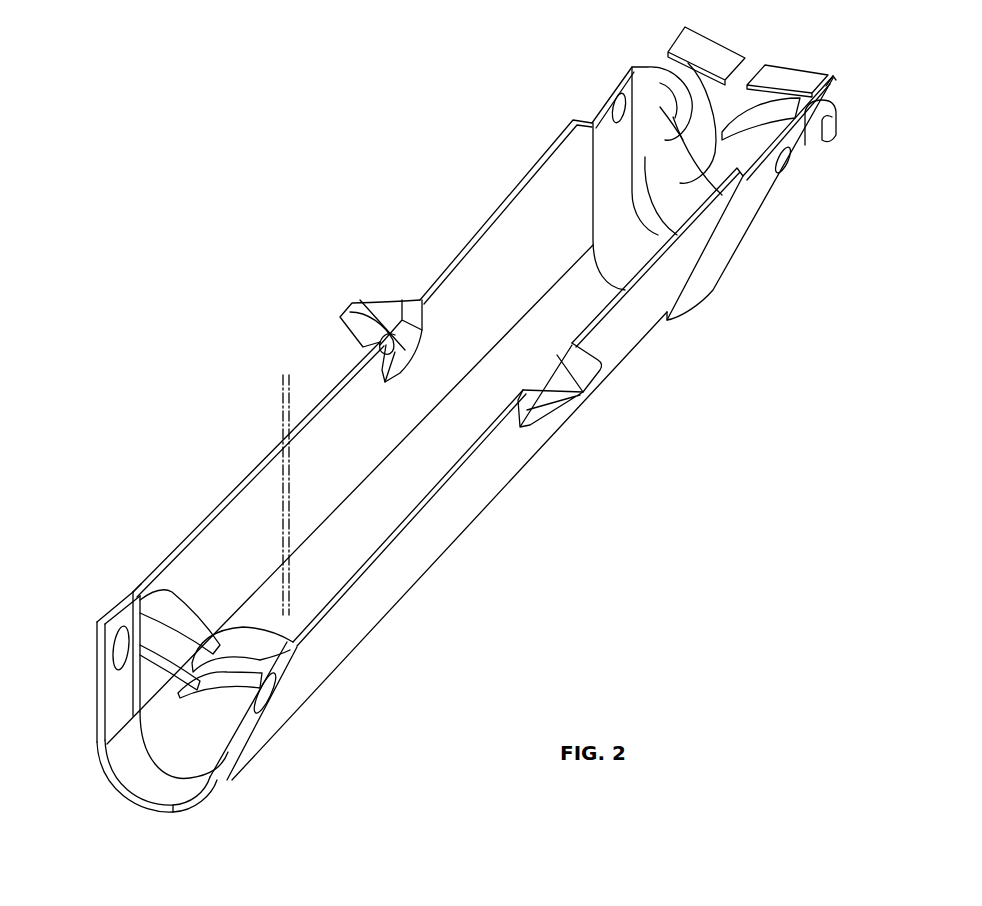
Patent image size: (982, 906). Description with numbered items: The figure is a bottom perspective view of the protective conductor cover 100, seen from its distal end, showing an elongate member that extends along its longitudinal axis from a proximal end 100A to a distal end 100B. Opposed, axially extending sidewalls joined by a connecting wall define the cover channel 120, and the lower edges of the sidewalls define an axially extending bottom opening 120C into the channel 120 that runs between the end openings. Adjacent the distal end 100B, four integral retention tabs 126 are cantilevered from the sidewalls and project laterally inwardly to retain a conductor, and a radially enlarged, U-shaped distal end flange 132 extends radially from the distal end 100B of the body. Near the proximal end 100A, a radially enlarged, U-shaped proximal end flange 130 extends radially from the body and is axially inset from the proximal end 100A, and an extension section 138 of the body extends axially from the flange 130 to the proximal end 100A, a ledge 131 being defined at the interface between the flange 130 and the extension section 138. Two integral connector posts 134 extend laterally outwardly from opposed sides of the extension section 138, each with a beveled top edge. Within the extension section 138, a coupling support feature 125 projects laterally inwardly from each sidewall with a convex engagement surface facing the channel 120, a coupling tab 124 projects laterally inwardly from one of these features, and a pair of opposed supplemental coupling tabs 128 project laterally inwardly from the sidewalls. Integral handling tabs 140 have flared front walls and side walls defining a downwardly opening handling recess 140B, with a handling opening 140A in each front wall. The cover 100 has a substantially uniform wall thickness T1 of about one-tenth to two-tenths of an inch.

The conductor cover 100 is at (120, 190).
The proximal end 100A is at (889, 164).
The distal end 100B is at (245, 800).
The cover channel 120 is at (352, 484).
The bottom opening 120C is at (270, 478).
The coupling tab 124 is at (835, 76).
The coupling support feature 125 is at (660, 83).
The retention tab 126 is at (170, 603).
The supplemental coupling tab 128 is at (713, 50).
The proximal end flange 130 is at (727, 260).
The ledge 131 is at (650, 215).
The distal end flange 132 is at (113, 707).
The connector post 134 is at (828, 128).
The extension section 138 is at (800, 157).
The handling tab 140 is at (338, 303).
The handling opening 140A is at (362, 304).
The handling recess 140B is at (394, 302).
The thickness T1 is at (289, 380).